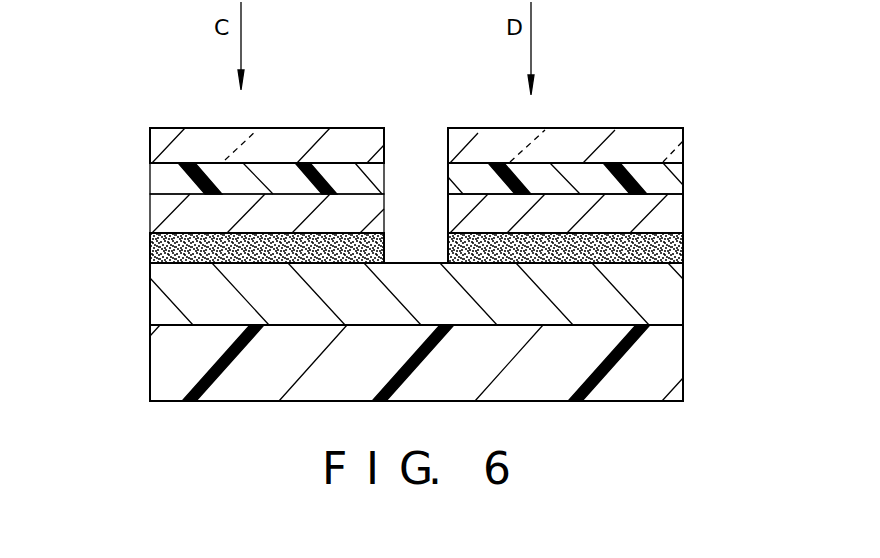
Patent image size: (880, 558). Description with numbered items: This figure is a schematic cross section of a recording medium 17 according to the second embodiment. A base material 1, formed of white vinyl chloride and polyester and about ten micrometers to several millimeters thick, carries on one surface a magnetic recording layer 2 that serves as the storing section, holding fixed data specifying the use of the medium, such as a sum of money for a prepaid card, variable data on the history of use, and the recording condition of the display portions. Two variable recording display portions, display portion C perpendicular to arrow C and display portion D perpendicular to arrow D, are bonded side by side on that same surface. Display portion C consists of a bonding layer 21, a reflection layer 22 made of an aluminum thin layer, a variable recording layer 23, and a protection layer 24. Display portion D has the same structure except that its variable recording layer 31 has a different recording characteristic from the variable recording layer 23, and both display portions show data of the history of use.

The base material 1 is at (663, 372).
The magnetic recording layer 2 is at (160, 297).
The recording medium 17 is at (684, 112).
The bonding layer 21 is at (152, 257).
The reflection layer 22 is at (162, 222).
The variable recording layer 23 is at (162, 178).
The protection layer 24 is at (185, 128).
The variable recording layer 31 is at (687, 172).